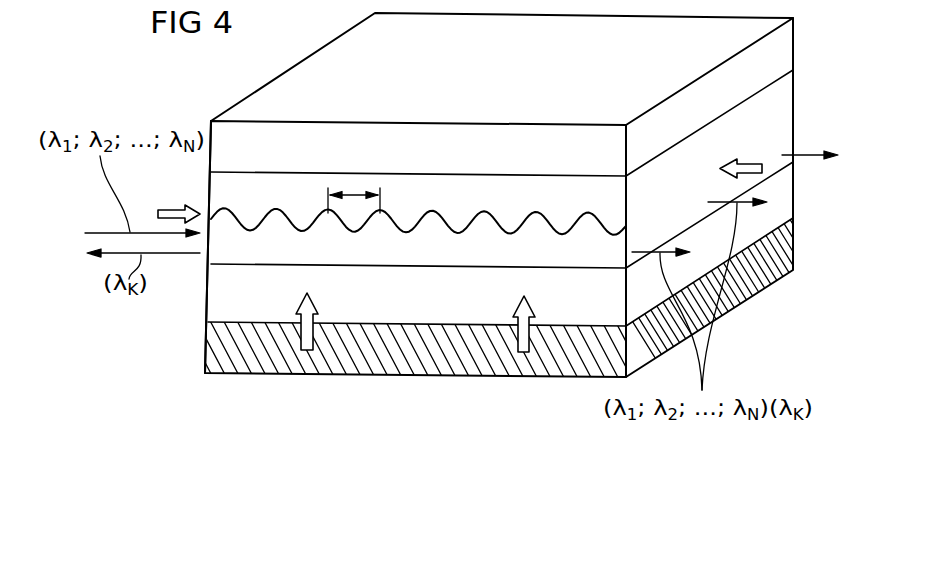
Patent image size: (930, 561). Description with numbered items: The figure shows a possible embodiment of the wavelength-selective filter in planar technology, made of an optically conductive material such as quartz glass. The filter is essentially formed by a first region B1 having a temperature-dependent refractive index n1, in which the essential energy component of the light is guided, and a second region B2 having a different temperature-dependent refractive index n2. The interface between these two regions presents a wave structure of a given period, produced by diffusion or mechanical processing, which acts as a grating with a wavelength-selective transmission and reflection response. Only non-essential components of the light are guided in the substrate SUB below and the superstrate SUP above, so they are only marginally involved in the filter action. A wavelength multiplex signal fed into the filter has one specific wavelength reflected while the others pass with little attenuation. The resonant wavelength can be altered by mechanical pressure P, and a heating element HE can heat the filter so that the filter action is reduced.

The superstrate SUP is at (502, 123).
The second region B2 is at (418, 209).
The first region B1 is at (502, 215).
The refractive index of the second region n2 is at (409, 195).
The refractive index of the first region n1 is at (407, 253).
The substrate SUB is at (500, 272).
The heating element HE is at (208, 342).
The mechanical pressure P is at (166, 207).